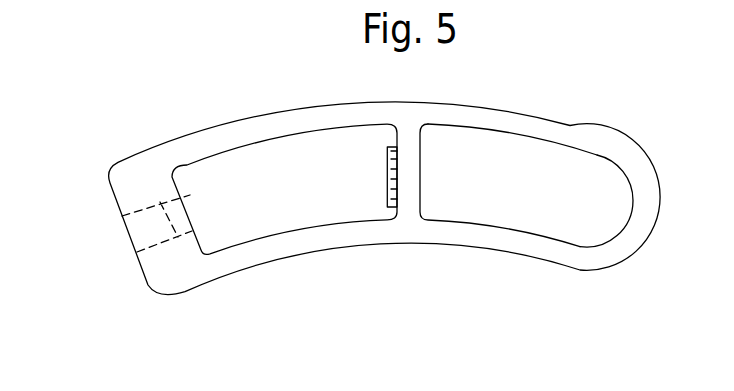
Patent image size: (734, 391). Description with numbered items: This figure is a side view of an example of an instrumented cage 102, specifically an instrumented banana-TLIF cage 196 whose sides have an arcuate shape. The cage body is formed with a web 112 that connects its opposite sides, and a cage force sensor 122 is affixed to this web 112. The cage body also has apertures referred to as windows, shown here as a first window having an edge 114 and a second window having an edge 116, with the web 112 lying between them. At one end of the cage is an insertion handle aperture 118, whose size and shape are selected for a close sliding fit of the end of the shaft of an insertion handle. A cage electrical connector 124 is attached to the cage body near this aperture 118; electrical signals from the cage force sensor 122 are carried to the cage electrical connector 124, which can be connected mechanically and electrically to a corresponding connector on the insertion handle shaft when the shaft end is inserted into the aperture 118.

The instrumented cage 102 is at (125, 76).
The instrumented banana-TLIF cage 196 is at (565, 118).
The edge of first window 114 is at (181, 167).
The cage force sensor 122 is at (387, 147).
The web 112 is at (423, 157).
The edge of second window 116 is at (598, 155).
The insertion handle aperture 118 is at (145, 205).
The cage electrical connector 124 is at (180, 237).